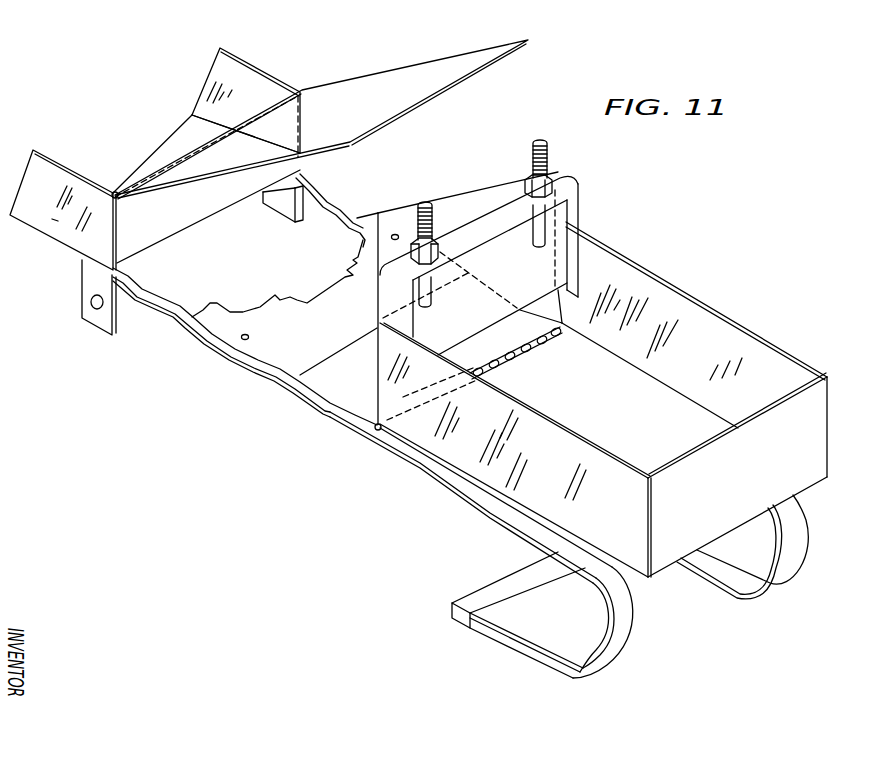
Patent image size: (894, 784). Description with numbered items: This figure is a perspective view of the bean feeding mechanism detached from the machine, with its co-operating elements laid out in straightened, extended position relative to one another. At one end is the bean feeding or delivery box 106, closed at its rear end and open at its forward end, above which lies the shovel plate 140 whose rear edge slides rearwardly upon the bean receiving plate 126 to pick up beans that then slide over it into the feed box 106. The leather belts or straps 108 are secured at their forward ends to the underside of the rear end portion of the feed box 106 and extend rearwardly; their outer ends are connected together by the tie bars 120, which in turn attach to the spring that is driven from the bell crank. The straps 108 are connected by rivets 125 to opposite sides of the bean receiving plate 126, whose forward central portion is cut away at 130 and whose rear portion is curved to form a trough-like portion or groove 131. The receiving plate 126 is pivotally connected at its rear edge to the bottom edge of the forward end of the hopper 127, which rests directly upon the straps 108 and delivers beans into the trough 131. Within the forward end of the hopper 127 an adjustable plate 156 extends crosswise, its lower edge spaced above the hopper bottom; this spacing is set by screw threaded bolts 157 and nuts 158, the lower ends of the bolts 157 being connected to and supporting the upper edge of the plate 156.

The bean feeding or delivery box 106 is at (34, 148).
The leather belts or straps 108 is at (323, 217).
The tie bars 120 is at (487, 590).
The rivets 125 is at (396, 234).
The bean receiving plate 126 is at (429, 301).
The hopper 127 is at (567, 430).
The cut-away portion 130 is at (357, 248).
The trough-like portion or groove 131 is at (320, 392).
The shovel plate 140 is at (424, 104).
The adjustable plate 156 is at (563, 217).
The screw threaded bolts 157 is at (534, 152).
The nuts 158 is at (524, 188).